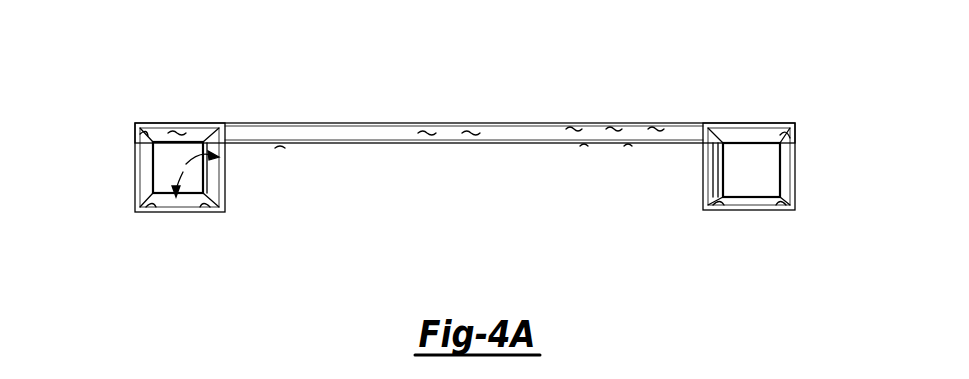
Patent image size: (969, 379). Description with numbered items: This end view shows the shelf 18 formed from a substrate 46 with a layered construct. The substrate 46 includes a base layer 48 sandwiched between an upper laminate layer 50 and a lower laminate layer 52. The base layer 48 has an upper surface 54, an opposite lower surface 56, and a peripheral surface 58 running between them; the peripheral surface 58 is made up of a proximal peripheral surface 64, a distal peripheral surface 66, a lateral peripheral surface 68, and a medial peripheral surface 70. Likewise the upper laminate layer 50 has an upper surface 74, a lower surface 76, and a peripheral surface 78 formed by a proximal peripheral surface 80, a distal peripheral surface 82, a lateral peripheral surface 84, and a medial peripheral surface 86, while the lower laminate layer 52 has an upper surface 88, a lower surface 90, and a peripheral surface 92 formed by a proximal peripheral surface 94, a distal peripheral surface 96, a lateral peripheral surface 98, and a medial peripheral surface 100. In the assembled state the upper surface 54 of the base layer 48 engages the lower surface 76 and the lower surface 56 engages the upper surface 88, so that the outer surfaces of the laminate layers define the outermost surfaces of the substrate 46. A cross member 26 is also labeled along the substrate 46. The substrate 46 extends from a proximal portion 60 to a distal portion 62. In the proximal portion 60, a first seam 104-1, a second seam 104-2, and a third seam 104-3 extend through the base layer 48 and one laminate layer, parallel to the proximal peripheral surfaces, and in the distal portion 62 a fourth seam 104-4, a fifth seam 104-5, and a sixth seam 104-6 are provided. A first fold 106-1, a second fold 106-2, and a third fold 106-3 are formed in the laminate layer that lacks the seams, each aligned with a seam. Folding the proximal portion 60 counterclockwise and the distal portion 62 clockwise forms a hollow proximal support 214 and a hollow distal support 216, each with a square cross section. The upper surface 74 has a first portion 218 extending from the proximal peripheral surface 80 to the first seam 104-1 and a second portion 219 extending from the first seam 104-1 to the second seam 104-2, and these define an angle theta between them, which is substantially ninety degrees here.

The shelf 18 is at (482, 85).
The cross member 26 is at (336, 126).
The substrate 46 is at (275, 123).
The base layer 48 is at (317, 144).
The upper laminate layer 50 is at (299, 125).
The lower laminate layer 52 is at (350, 144).
The upper surface 54 is at (360, 126).
The lower surface 56 is at (404, 144).
The peripheral surface 58 is at (174, 83).
The proximal portion 60 is at (143, 167).
The distal portion 62 is at (775, 166).
The proximal peripheral surface 64 is at (211, 81).
The distal peripheral surface 66 is at (712, 127).
The lateral peripheral surface 68 is at (428, 125).
The medial peripheral surface 70 is at (472, 125).
The upper surface 74 is at (523, 125).
The lower surface 76 is at (538, 144).
The peripheral surface 78 is at (573, 127).
The proximal peripheral surface 80 is at (229, 111).
The distal peripheral surface 82 is at (705, 125).
The lateral peripheral surface 84 is at (613, 127).
The medial peripheral surface 86 is at (655, 127).
The upper surface 88 is at (311, 128).
The lower surface 90 is at (383, 144).
The peripheral surface 92 is at (280, 147).
The proximal peripheral surface 94 is at (197, 109).
The distal peripheral surface 96 is at (727, 127).
The lateral peripheral surface 98 is at (584, 146).
The medial peripheral surface 100 is at (628, 146).
The first seam 104-1 is at (219, 259).
The second seam 104-2 is at (133, 236).
The third seam 104-3 is at (92, 123).
The fourth seam 104-4 is at (717, 205).
The fifth seam 104-5 is at (776, 205).
The sixth seam 104-6 is at (793, 123).
The first fold 106-1 is at (248, 242).
The second fold 106-2 is at (104, 253).
The third fold 106-3 is at (124, 92).
The hollow proximal support 214 is at (91, 217).
The hollow distal support 216 is at (798, 172).
The first portion 218 is at (273, 203).
The second portion 219 is at (168, 248).
The angle theta is at (195, 173).